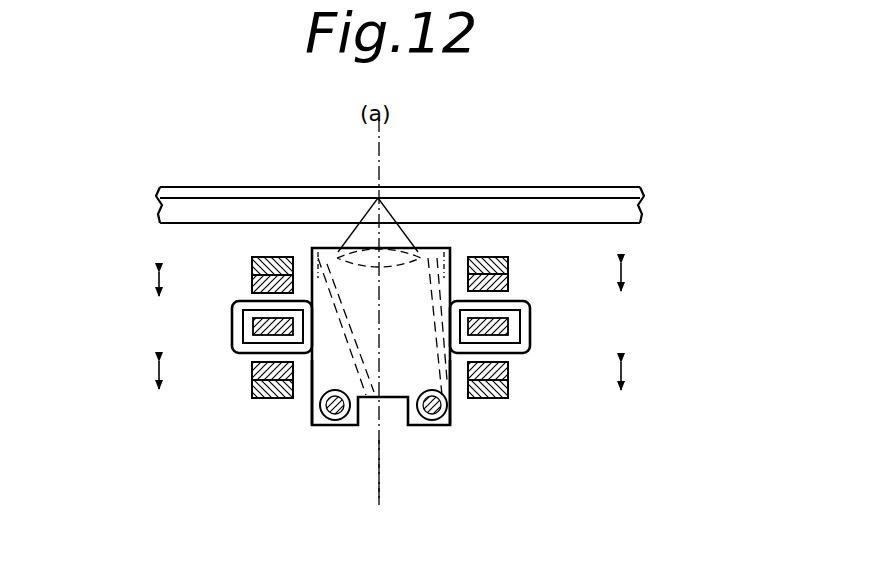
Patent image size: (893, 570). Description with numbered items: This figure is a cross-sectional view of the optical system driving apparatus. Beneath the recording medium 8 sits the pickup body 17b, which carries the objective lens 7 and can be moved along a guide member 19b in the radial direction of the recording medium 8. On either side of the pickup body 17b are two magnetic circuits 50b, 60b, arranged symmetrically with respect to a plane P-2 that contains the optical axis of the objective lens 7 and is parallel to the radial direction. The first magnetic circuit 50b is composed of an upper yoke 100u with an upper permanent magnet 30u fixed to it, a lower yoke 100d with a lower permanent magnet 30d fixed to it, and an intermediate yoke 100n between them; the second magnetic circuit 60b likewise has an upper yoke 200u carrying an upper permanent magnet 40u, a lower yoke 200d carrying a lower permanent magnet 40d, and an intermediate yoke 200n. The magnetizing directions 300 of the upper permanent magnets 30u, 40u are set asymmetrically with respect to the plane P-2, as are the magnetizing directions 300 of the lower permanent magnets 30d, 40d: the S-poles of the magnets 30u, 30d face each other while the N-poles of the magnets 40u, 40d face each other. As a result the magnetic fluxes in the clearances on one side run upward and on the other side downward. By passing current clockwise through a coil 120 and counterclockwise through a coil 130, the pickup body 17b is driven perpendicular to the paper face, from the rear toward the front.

The recording medium 8 is at (288, 197).
The objective lens 7 is at (338, 252).
The pickup body 17b is at (441, 258).
The guide member 19b is at (335, 421).
The upper yoke 100u is at (252, 263).
The upper permanent magnet 30u is at (252, 280).
The intermediate yoke 100n is at (243, 326).
The lower permanent magnet 30d is at (252, 374).
The lower yoke 100d is at (252, 393).
The upper yoke 200u is at (500, 263).
The upper permanent magnet 40u is at (508, 279).
The intermediate yoke 200n is at (512, 324).
The lower permanent magnet 40d is at (510, 369).
The lower yoke 200d is at (510, 393).
The coil 120 is at (303, 372).
The coil 130 is at (465, 363).
The magnetic circuit 50b is at (252, 420).
The magnetic circuit 60b is at (511, 410).
The plane P-2 is at (383, 455).
The magnetizing directions 300 is at (155, 286).